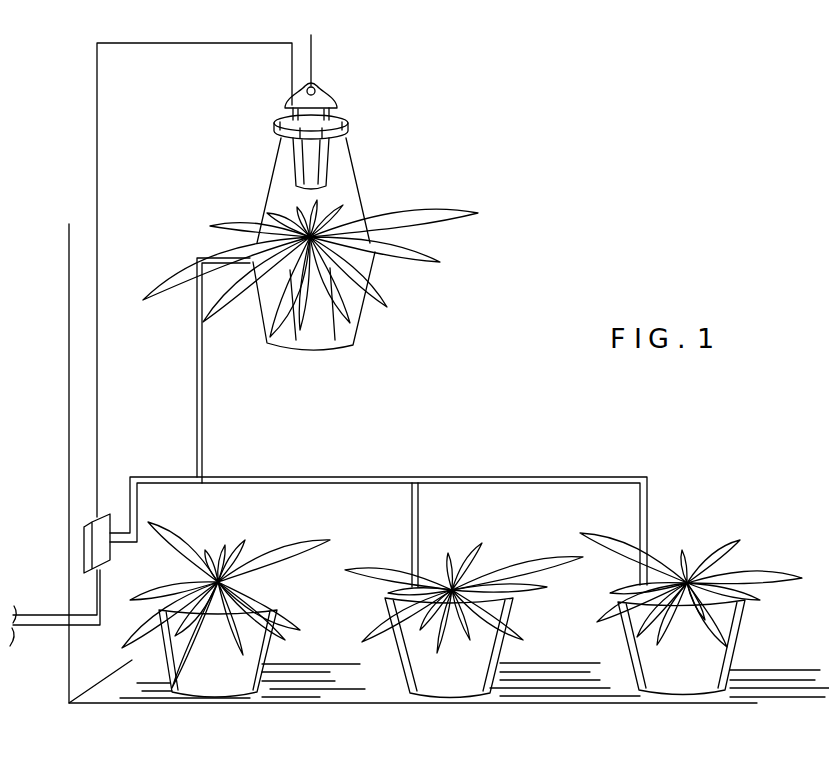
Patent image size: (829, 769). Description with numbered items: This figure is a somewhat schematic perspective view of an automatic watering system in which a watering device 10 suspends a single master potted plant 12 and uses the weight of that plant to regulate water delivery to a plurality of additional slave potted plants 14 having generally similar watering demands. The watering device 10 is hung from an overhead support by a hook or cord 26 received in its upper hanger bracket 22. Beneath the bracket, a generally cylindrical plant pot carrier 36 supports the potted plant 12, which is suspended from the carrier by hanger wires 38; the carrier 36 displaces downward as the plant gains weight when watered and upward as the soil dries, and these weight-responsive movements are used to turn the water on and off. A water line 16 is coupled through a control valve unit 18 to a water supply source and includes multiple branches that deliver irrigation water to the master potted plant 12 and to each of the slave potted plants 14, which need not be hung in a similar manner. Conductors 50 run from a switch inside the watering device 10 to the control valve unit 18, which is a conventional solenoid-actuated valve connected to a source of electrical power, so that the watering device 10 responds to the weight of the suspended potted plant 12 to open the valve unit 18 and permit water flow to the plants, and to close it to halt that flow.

The watering device 10 is at (383, 121).
The potted plant 12 is at (363, 316).
The additional potted plants 14 is at (184, 688).
The water line 16 is at (203, 408).
The control valve unit 18 is at (84, 545).
The upper hanger bracket 22 is at (314, 89).
The hook or cord 26 is at (318, 50).
The plant pot carrier 36 is at (322, 173).
The hanger wires 38 is at (269, 186).
The conductors 50 is at (211, 43).